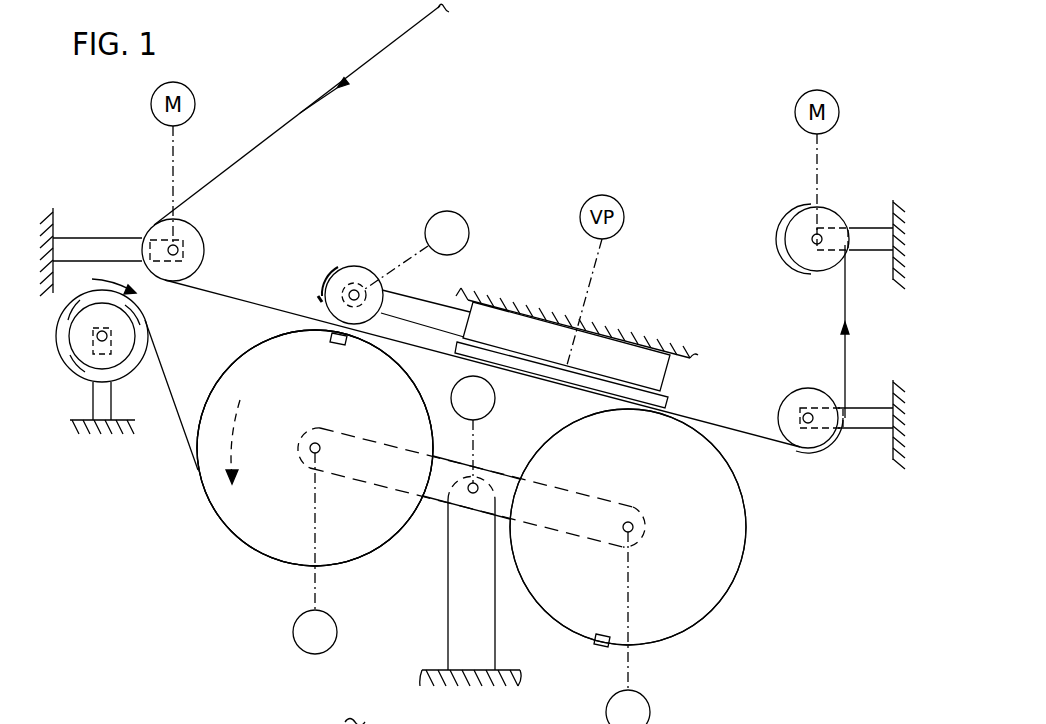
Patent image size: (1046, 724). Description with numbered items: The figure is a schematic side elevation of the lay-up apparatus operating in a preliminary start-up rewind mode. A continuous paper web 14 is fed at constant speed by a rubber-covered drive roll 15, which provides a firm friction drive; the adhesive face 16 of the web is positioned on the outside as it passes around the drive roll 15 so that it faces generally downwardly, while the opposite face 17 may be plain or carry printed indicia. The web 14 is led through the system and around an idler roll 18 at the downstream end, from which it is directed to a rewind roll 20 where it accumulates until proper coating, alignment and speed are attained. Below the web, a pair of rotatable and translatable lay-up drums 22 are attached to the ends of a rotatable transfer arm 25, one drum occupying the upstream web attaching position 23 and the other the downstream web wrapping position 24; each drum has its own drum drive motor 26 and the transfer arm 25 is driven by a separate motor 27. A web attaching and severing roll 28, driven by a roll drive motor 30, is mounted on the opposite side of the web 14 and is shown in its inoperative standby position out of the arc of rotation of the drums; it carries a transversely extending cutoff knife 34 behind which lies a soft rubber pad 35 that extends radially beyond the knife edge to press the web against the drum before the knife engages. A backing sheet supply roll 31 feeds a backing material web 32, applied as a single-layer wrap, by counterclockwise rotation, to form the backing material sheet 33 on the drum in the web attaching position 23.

The continuous web 14 is at (283, 126).
The drive roll 15 is at (194, 247).
The adhesive face 16 is at (262, 312).
The opposite face 17 is at (318, 102).
The idler roll 18 is at (797, 403).
The rewind roll 20 is at (796, 232).
The lay-up drum 22 is at (363, 547).
The web attaching position 23 is at (203, 513).
The web wrapping position 24 is at (756, 563).
The transfer arm 25 is at (440, 493).
The drum drive motor 26 is at (292, 632).
The transfer arm motor 27 is at (495, 398).
The web attaching and severing roll 28 is at (360, 288).
The roll drive motor 30 is at (466, 226).
The backing sheet supply roll 31 is at (88, 352).
The backing material web 32 is at (163, 368).
The backing material sheet 33 is at (258, 560).
The cutoff knife 34 is at (318, 300).
The soft rubber pad 35 is at (330, 268).